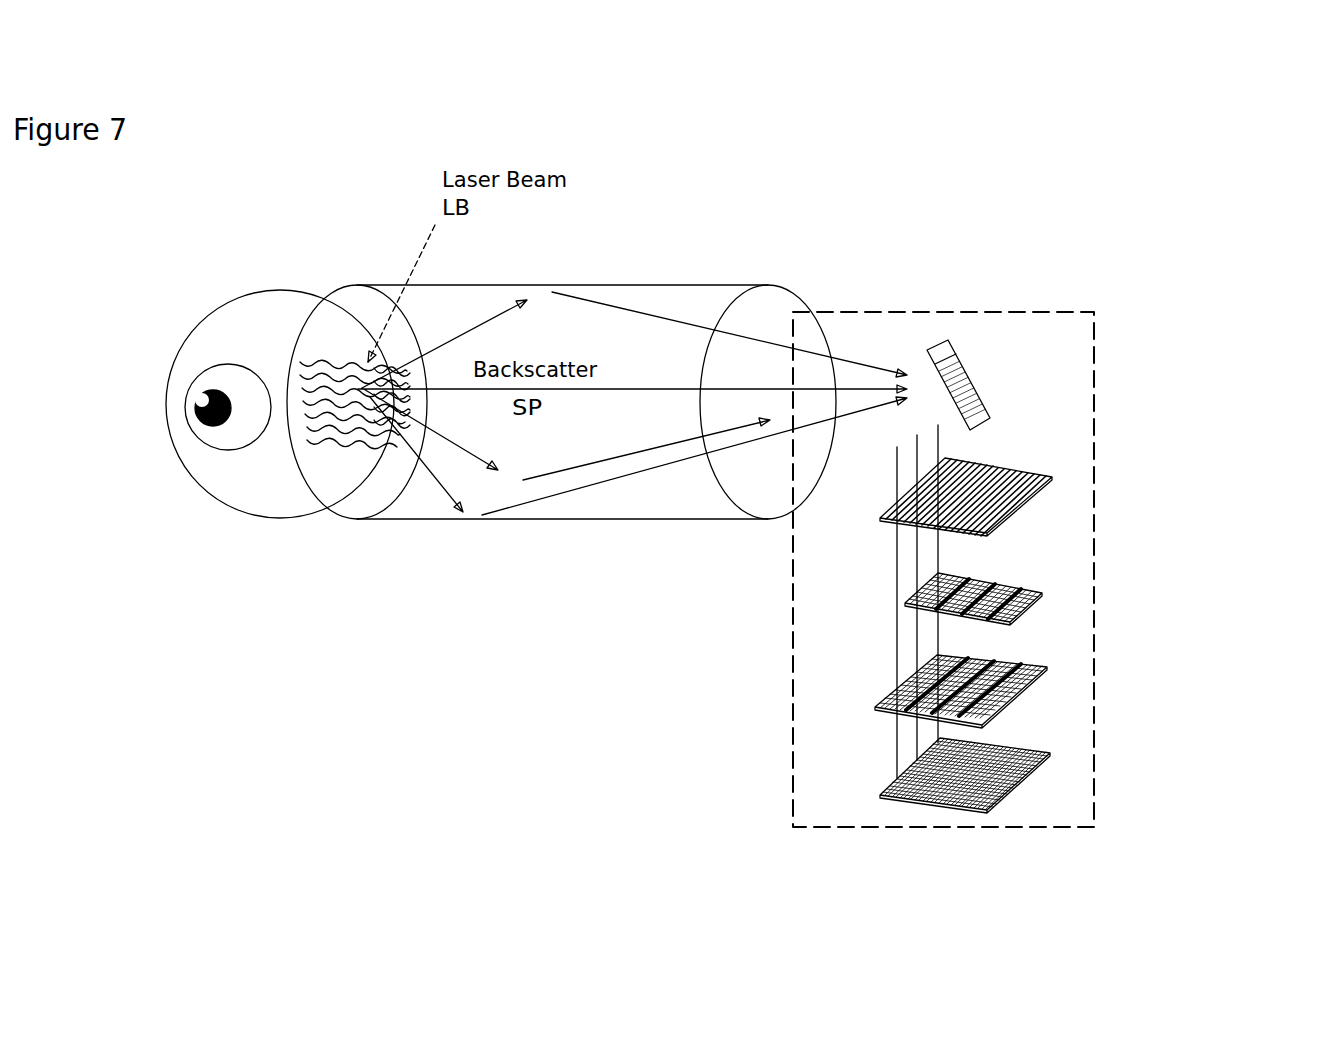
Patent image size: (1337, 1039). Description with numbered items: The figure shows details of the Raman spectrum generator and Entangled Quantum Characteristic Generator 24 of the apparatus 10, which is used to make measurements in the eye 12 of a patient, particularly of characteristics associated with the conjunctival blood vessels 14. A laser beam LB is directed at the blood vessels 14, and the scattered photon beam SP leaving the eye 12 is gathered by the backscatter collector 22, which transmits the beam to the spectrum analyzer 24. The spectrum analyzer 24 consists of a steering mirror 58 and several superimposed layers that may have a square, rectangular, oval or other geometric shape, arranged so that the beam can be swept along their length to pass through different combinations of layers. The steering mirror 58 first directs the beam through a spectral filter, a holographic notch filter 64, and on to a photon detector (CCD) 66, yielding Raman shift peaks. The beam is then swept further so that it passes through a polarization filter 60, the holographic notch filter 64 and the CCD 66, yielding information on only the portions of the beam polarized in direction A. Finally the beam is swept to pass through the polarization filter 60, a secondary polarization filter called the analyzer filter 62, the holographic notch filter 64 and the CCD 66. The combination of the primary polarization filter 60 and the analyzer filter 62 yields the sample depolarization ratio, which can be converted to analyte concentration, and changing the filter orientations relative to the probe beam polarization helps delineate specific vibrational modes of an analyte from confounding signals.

The apparatus 10 is at (1065, 548).
The eye 12 is at (77, 307).
The conjunctival blood vessels 14 is at (320, 243).
The backscatter collector 22 is at (415, 527).
The Raman spectrum generator and Entangled Quantum Characteristic Generator 24 is at (943, 548).
The steering mirror 58 is at (1252, 337).
The polarization filter 60 is at (1252, 422).
The analyzer filter 62 is at (1252, 526).
The holographic notch filter 64 is at (1252, 616).
The photon detector (CCD) 66 is at (1252, 703).